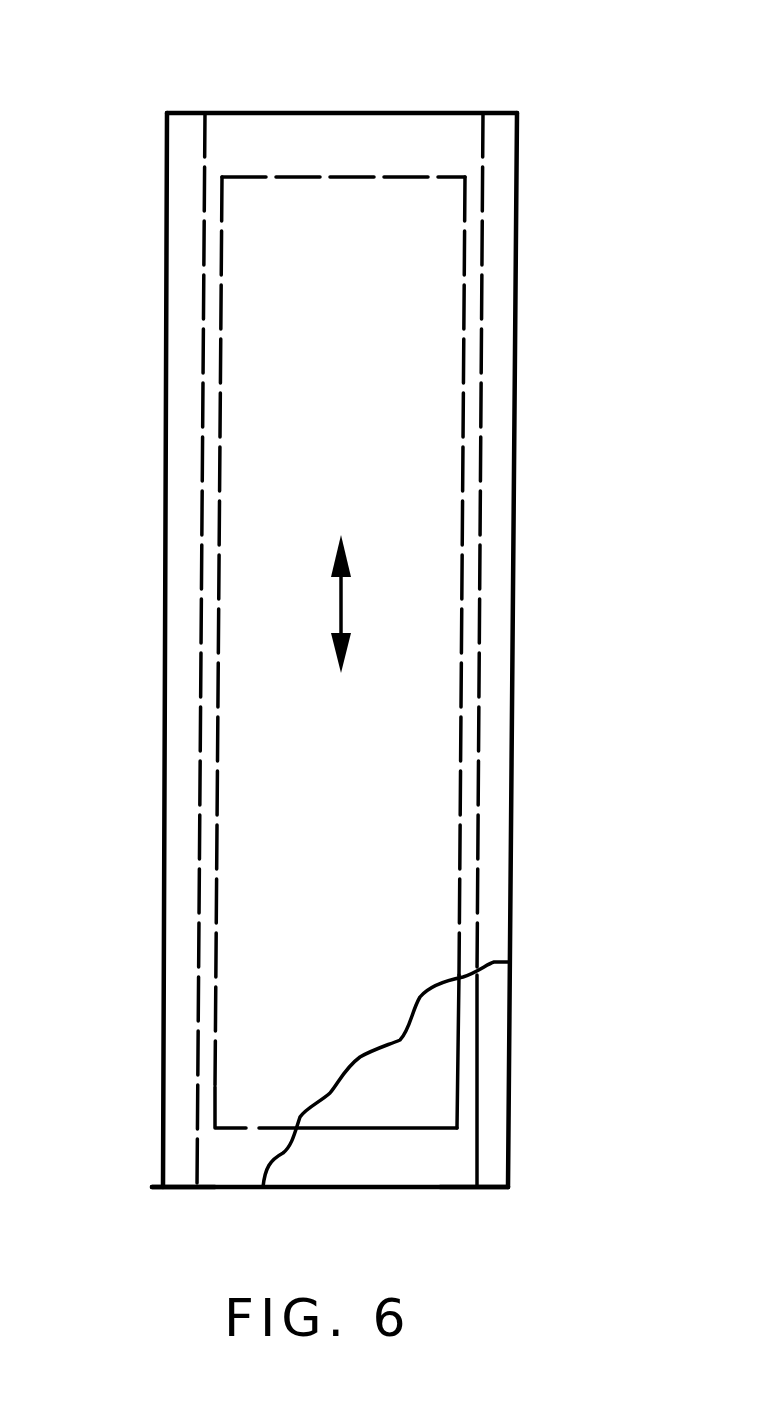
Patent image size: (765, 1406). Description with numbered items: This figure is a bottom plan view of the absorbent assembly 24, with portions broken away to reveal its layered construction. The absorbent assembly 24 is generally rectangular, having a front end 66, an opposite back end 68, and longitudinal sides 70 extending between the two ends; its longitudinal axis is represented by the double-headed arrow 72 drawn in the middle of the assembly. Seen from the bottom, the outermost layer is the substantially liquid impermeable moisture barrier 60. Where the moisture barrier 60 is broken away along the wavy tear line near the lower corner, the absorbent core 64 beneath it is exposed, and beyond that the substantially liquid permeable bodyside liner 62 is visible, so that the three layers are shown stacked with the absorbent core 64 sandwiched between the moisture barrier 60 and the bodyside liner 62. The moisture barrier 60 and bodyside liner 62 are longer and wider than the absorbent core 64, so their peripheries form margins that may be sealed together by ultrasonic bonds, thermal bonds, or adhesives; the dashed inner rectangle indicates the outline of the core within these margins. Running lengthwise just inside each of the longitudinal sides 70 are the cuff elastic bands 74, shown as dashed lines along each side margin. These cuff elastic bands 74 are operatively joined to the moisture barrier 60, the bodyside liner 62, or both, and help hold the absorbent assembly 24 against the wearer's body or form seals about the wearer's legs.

The absorbent assembly 24 is at (235, 113).
The front end 66 is at (460, 113).
The longitudinal sides 70 is at (167, 260).
The cuff elastic bands 74 is at (182, 952).
The moisture barrier 60 is at (378, 382).
The arrow 72 is at (343, 600).
The back end 68 is at (205, 1188).
The absorbent core 64 is at (370, 1108).
The bodyside liner 62 is at (447, 1158).